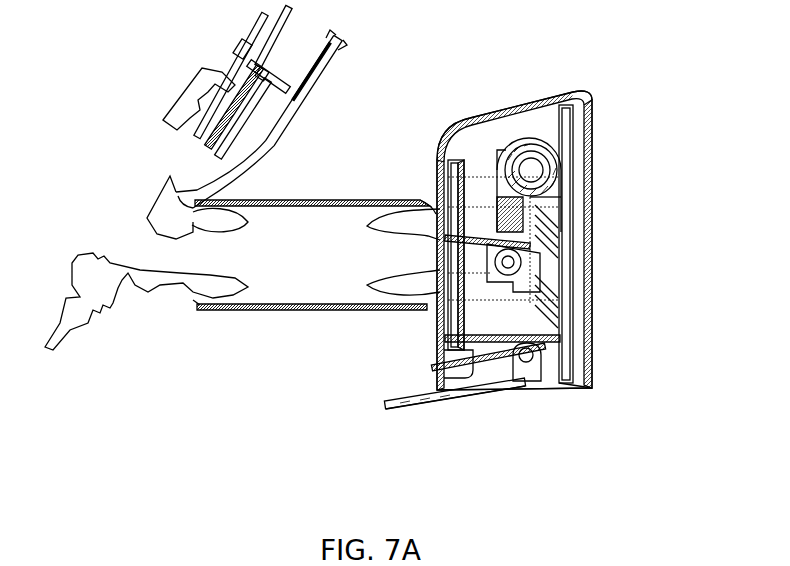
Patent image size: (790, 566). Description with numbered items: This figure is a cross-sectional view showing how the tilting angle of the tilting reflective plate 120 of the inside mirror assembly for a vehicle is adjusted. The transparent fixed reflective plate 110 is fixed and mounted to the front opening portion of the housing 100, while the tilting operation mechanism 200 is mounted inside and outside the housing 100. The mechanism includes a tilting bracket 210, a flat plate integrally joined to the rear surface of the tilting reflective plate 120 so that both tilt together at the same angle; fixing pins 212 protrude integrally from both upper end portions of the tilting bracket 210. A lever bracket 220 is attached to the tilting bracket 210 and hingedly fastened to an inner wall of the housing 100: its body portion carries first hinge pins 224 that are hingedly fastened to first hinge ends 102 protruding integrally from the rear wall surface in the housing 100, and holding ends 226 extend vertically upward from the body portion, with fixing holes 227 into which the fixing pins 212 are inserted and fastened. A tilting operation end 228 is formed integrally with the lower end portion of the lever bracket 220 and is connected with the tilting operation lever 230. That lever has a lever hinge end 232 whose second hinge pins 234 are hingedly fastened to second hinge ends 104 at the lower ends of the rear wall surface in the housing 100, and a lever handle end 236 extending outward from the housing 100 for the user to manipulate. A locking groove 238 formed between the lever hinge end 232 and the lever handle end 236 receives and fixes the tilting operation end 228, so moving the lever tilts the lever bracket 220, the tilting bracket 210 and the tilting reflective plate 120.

The housing 100 is at (466, 120).
The first hinge ends 102 is at (447, 303).
The second hinge ends 104 is at (447, 370).
The transparent fixed reflective plate 110 is at (593, 100).
The tilting reflective plate 120 is at (582, 127).
The tilting operation mechanism 200 is at (512, 120).
The tilting bracket 210 is at (574, 222).
The fixing pins 212 is at (527, 150).
The lever bracket 220 is at (495, 148).
The first hinge pins 224 is at (535, 262).
The holding ends 226 is at (456, 192).
The fixing holes 227 is at (556, 170).
The tilting operation end 228 is at (527, 388).
The tilting operation lever 230 is at (378, 406).
The lever hinge end 232 is at (497, 370).
The second hinge pins 234 is at (573, 353).
The lever handle end 236 is at (412, 413).
The locking groove 238 is at (590, 386).